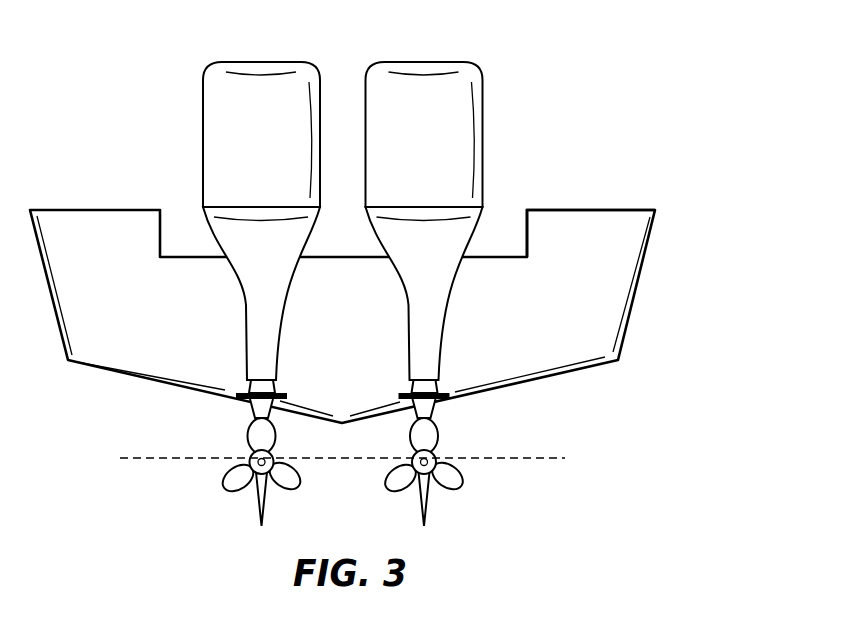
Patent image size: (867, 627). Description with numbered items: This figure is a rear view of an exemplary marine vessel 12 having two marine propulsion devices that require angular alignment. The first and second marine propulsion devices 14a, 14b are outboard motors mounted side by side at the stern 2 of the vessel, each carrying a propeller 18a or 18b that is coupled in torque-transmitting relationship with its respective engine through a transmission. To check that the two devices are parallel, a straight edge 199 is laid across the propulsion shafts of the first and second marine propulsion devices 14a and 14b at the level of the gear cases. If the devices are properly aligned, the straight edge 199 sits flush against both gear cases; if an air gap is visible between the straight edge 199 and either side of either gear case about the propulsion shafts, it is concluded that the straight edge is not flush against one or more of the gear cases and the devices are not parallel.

The marine vessel 12 is at (660, 197).
The stern 2 is at (563, 228).
The first marine propulsion device 14a is at (200, 66).
The second marine propulsion device 14b is at (487, 66).
The propeller 18a is at (253, 438).
The propeller 18b is at (433, 436).
The straight edge 199 is at (538, 455).